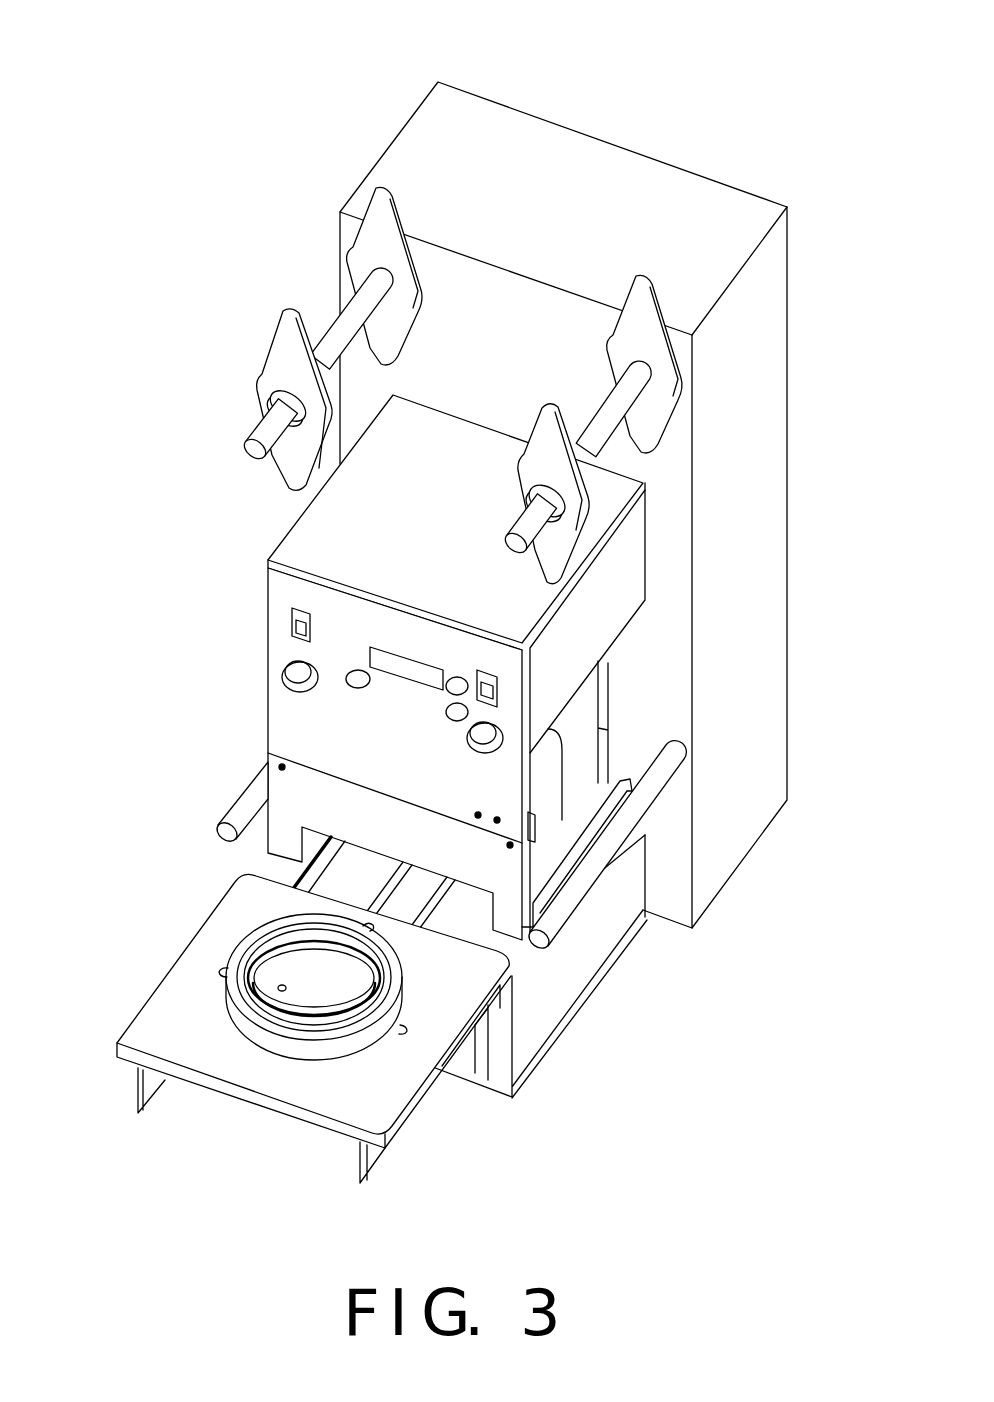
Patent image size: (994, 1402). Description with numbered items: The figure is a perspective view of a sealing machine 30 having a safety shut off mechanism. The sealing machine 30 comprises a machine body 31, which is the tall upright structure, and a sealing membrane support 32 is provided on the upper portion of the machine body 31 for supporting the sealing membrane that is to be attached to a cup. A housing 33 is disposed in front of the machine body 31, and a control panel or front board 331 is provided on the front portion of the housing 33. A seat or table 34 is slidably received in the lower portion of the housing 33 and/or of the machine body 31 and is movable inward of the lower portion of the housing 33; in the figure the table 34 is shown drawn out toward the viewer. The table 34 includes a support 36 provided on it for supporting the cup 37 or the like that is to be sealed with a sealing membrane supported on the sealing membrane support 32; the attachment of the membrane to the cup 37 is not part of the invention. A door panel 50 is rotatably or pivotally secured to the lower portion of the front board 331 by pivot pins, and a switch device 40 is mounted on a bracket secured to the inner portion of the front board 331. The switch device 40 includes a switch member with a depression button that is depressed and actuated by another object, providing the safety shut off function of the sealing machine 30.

The sealing machine 30 is at (449, 605).
The machine body 31 is at (770, 333).
The sealing membrane support 32 is at (573, 527).
The housing 33 is at (265, 595).
The front board 331 is at (287, 717).
The table 34 is at (374, 993).
The support 36 is at (292, 1045).
The cup 37 is at (260, 966).
The switch device 40 is at (538, 834).
The door panel 50 is at (270, 820).